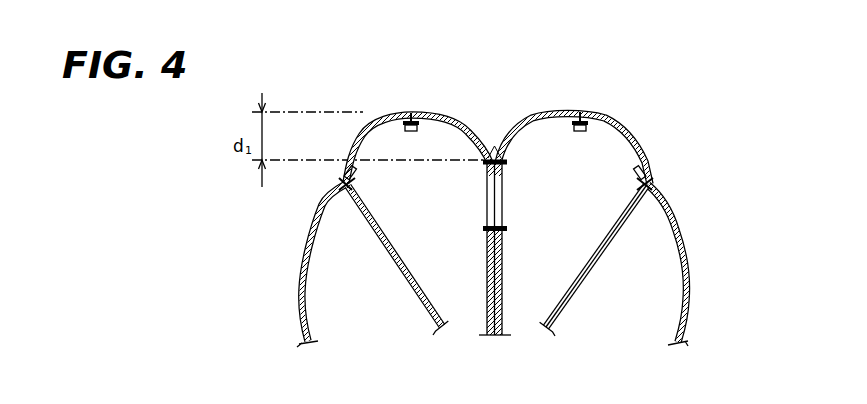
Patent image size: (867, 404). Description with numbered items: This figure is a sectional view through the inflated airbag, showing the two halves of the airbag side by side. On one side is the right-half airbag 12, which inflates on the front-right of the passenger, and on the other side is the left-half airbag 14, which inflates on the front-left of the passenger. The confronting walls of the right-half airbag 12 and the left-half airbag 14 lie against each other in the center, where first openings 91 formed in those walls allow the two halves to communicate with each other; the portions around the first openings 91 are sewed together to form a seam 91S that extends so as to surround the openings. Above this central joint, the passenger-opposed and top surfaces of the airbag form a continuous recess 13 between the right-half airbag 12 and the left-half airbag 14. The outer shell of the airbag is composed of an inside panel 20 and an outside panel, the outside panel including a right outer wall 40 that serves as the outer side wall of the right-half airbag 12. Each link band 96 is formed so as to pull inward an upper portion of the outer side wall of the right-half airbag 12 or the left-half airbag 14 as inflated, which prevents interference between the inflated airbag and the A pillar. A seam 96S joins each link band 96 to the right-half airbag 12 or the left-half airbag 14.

The right-half airbag 12 is at (292, 243).
The recess 13 is at (494, 143).
The left-half airbag 14 is at (670, 162).
The inside panel 20 is at (452, 116).
The right outer wall 40 is at (631, 134).
The first openings 91 is at (486, 206).
The seam 91S is at (504, 164).
The link band 96 is at (397, 272).
The seam 96S is at (342, 184).